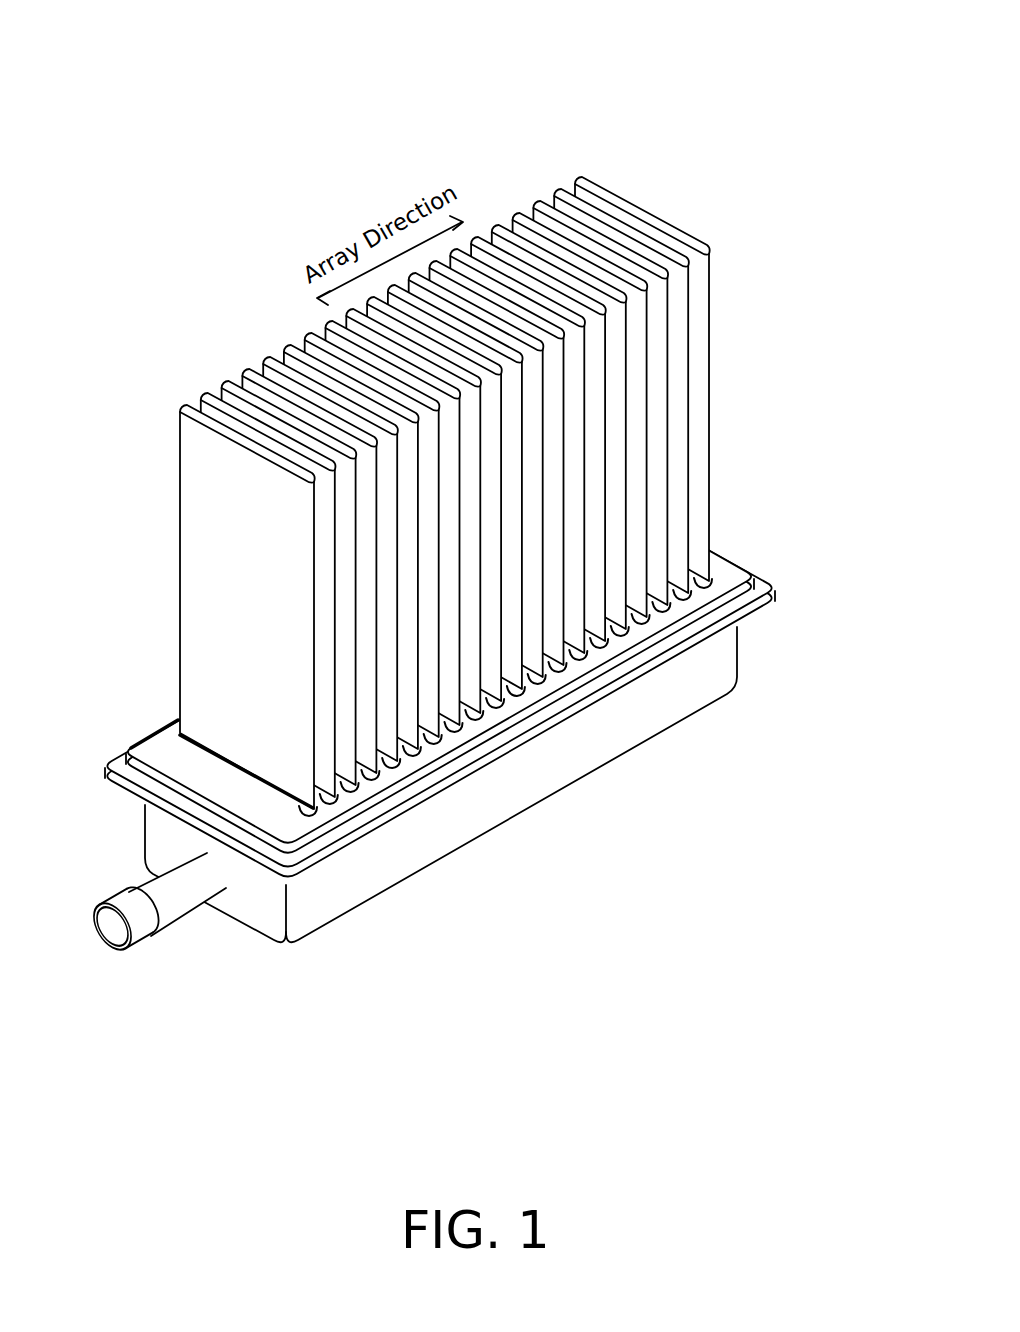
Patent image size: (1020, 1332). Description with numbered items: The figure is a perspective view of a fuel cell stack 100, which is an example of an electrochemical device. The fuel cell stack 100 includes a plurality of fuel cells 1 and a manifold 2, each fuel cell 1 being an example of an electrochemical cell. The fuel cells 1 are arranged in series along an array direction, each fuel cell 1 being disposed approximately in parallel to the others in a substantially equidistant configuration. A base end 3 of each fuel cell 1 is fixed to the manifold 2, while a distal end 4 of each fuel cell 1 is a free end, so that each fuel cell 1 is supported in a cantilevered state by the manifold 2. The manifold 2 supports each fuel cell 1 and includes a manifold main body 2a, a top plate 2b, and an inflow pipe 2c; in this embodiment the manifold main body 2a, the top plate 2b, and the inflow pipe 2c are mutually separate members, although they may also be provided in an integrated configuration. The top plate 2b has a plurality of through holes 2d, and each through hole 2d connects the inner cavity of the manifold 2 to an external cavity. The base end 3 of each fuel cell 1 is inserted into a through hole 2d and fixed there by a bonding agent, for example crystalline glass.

The fuel cell stack 100 is at (435, 529).
The fuel cell 1 is at (416, 465).
The distal end 4 is at (199, 446).
The base end 3 is at (197, 720).
The manifold 2 is at (435, 766).
The manifold main body 2a is at (287, 950).
The top plate 2b is at (167, 758).
The inflow pipe 2c is at (158, 907).
The through hole 2d is at (688, 583).